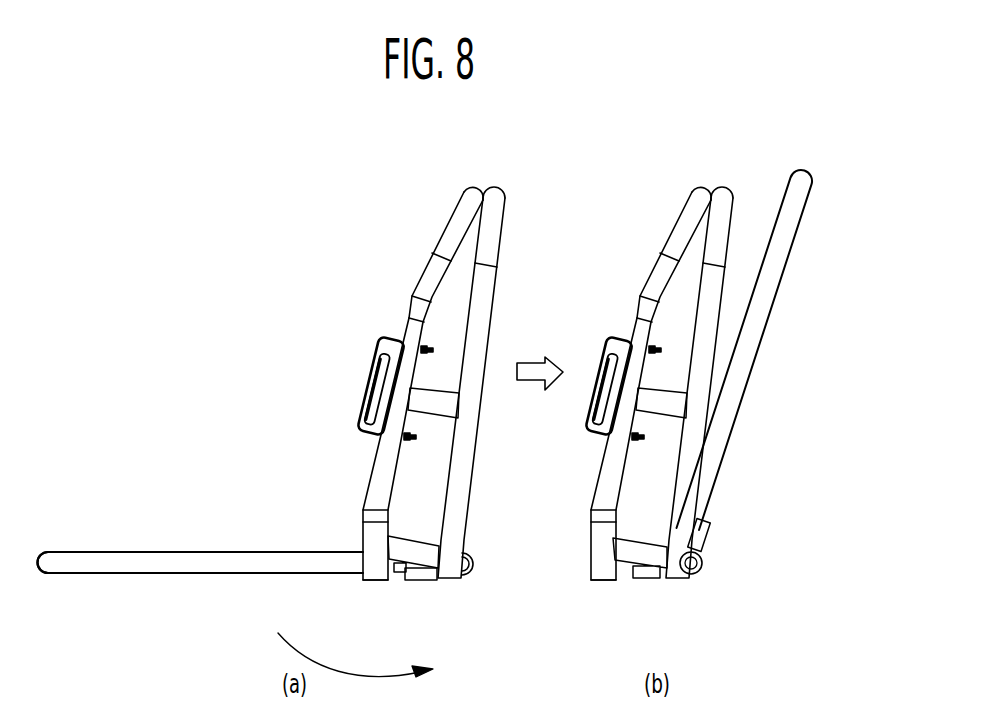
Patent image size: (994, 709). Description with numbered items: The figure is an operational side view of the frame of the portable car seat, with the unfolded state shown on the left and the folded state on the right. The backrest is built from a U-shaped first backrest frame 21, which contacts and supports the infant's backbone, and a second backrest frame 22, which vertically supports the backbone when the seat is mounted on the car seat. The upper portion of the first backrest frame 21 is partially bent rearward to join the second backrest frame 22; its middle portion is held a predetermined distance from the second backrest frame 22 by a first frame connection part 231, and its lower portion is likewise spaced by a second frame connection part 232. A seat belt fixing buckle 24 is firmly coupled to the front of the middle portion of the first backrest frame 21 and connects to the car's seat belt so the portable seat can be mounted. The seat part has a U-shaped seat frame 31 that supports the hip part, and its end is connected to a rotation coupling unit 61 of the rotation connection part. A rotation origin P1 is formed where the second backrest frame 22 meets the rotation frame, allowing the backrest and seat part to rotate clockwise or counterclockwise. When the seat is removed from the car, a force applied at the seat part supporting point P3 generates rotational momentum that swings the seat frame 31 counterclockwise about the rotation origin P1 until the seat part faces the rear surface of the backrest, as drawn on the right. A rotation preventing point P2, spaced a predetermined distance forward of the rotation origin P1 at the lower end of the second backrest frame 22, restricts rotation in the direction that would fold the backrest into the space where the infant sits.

The first backrest frame 21 is at (453, 228).
The second backrest frame 22 is at (499, 201).
The seat belt fixing buckle 24 is at (382, 344).
The seat frame 31 is at (133, 574).
The rotation coupling unit 61 is at (420, 582).
The first frame connection part 231 is at (430, 408).
The second frame connection part 232 is at (402, 545).
The rotation origin P1 is at (448, 572).
The rotation preventing point P2 is at (373, 572).
The seat part supporting point P3 is at (47, 565).